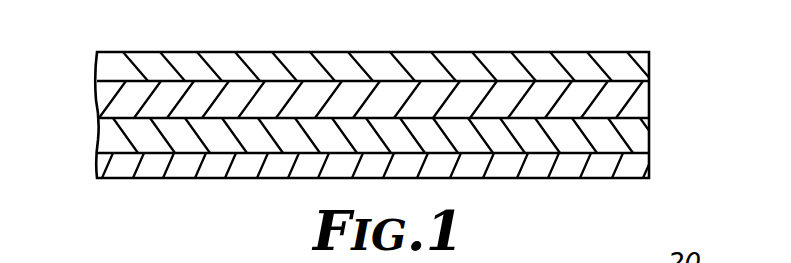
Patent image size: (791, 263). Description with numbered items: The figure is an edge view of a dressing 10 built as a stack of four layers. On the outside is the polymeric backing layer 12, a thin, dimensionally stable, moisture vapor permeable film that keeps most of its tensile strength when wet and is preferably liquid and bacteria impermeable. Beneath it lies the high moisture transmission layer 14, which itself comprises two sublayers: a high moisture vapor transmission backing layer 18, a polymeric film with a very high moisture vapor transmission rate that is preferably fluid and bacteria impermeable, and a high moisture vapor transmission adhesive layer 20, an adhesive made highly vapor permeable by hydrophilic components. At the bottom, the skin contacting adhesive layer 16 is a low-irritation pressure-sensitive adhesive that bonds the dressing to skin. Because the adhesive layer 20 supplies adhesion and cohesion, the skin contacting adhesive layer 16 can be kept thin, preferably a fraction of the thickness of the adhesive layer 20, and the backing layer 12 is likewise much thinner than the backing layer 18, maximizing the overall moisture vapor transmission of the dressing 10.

The dressing 10 is at (619, 52).
The polymeric backing layer 12 is at (649, 63).
The high moisture transmission layer 14 is at (88, 80).
The skin contacting adhesive layer 16 is at (623, 170).
The high moisture vapor transmission backing layer 18 is at (641, 100).
The high moisture vapor transmission adhesive layer 20 is at (640, 137).